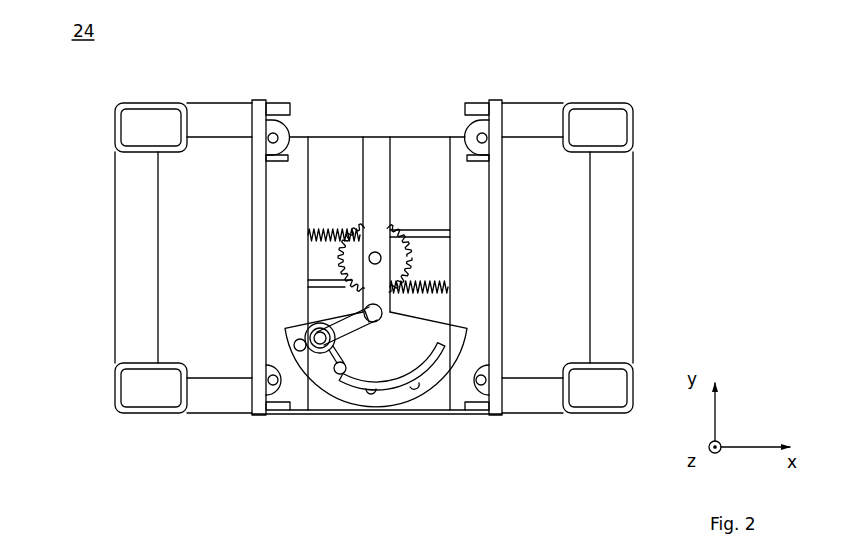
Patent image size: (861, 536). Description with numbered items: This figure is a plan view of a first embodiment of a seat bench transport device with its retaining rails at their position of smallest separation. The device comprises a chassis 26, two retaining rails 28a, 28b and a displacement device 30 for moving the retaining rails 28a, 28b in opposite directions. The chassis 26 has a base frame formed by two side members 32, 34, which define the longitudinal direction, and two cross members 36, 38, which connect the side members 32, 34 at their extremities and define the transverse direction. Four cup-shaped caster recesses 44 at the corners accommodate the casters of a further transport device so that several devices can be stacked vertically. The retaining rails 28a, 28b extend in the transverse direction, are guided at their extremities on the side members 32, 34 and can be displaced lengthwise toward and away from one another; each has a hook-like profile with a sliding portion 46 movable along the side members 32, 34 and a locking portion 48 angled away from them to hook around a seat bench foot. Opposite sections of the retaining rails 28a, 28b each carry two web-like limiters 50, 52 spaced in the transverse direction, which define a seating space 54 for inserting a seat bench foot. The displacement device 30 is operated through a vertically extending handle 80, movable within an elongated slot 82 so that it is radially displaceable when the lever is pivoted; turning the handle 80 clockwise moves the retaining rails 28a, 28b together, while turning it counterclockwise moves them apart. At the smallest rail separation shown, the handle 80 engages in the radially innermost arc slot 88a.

The chassis 26 is at (395, 254).
The retaining rail 28a is at (346, 218).
The retaining rail 28b is at (515, 92).
The displacement device 30 is at (293, 255).
The side member 32 is at (139, 254).
The side member 34 is at (218, 403).
The cross member 36 is at (137, 198).
The cross member 38 is at (633, 243).
The caster recess 44 is at (605, 130).
The sliding portion 46 is at (281, 285).
The locking portion 48 is at (260, 251).
The limiter 50 is at (291, 110).
The limiter 52 is at (313, 139).
The seating space 54 is at (291, 156).
The handle 80 is at (319, 354).
The elongated slot 82 is at (304, 349).
The arc slot 88a is at (335, 378).